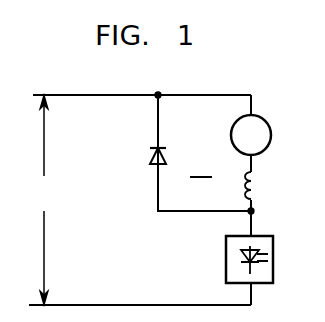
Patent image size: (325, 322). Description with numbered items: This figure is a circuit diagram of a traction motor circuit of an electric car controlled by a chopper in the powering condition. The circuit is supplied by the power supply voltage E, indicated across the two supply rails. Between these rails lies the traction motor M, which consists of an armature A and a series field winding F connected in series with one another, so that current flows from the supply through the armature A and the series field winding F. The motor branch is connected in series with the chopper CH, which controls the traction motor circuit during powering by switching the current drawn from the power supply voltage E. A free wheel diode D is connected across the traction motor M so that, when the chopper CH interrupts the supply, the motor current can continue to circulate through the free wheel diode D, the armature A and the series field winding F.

The power supply voltage E is at (42, 200).
The free wheel diode D is at (153, 154).
The traction motor M is at (201, 162).
The armature A is at (251, 135).
The series field winding F is at (254, 174).
The chopper CH is at (226, 243).